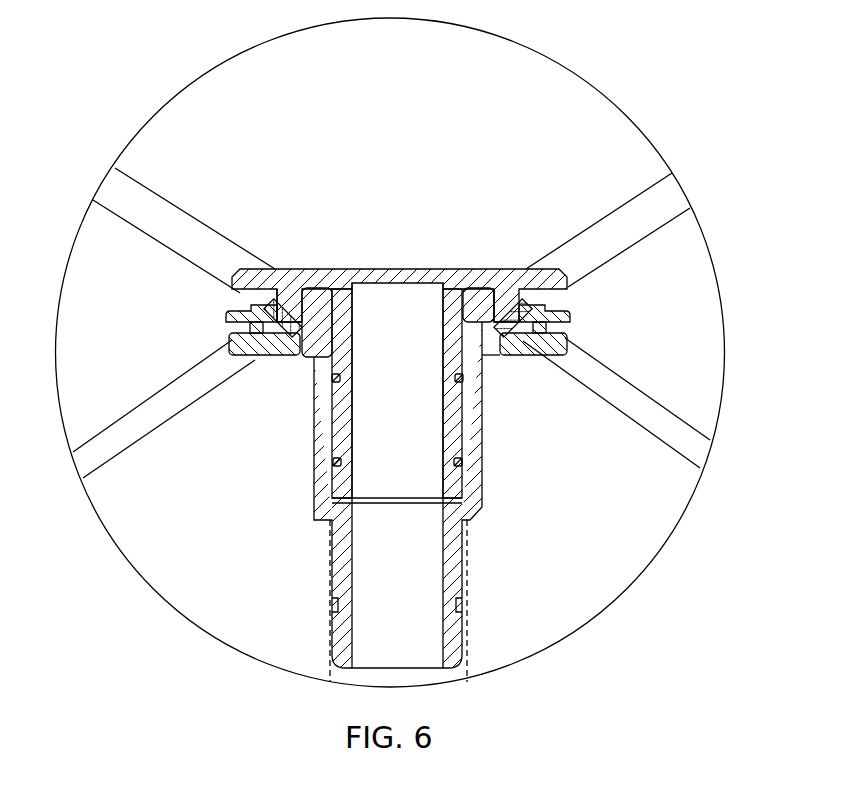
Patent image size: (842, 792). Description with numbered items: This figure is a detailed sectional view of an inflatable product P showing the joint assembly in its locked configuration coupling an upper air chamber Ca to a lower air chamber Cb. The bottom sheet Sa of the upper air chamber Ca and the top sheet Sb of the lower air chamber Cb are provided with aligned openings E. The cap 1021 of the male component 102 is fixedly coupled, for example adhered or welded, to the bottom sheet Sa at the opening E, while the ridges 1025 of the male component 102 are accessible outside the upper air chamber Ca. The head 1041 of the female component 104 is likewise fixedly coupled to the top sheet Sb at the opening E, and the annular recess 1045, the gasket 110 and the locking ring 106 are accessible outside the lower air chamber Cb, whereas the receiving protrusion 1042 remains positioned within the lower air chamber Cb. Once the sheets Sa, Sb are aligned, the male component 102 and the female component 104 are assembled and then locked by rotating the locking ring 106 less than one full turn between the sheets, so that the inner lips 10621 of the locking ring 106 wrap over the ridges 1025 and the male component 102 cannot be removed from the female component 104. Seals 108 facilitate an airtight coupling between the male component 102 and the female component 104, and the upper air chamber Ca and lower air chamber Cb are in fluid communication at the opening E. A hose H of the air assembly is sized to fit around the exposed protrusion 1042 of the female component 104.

The upper air chamber Ca is at (286, 100).
The lower air chamber Cb is at (604, 512).
The bottom sheet Sa is at (148, 208).
The top sheet Sb is at (127, 425).
The inflatable product P is at (696, 389).
The opening E is at (402, 240).
The hose H is at (468, 657).
The male component 102 is at (482, 240).
The cap 1021 is at (322, 252).
The ridges 1025 is at (228, 297).
The female component 104 is at (298, 494).
The head 1041 is at (220, 345).
The receiving protrusion 1042 is at (316, 605).
The annular recess 1045 is at (253, 365).
The locking ring 106 is at (575, 316).
The inner lips 10621 is at (508, 308).
The seals 108 is at (468, 461).
The gasket 110 is at (468, 378).